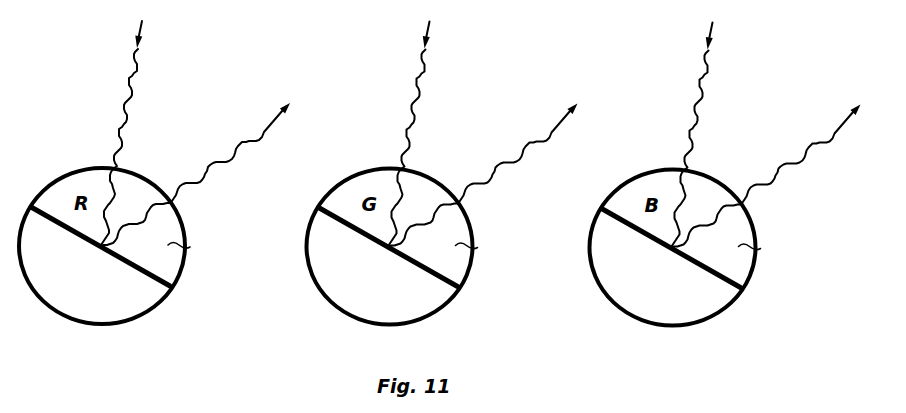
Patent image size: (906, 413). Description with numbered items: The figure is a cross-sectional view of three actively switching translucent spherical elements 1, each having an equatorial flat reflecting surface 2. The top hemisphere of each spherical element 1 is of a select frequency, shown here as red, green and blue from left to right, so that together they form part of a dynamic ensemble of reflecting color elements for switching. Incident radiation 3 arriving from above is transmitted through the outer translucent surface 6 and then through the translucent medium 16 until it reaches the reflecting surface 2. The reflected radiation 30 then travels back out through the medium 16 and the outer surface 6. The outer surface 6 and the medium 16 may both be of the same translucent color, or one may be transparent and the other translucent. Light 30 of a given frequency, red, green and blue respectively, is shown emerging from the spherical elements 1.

The translucent spherical element 1 is at (222, 314).
The reflecting surface 2 is at (72, 235).
The incident radiation 3 is at (123, 89).
The outer translucent surface 6 is at (182, 223).
The translucent medium 16 is at (190, 247).
The reflected radiation 30 is at (240, 147).